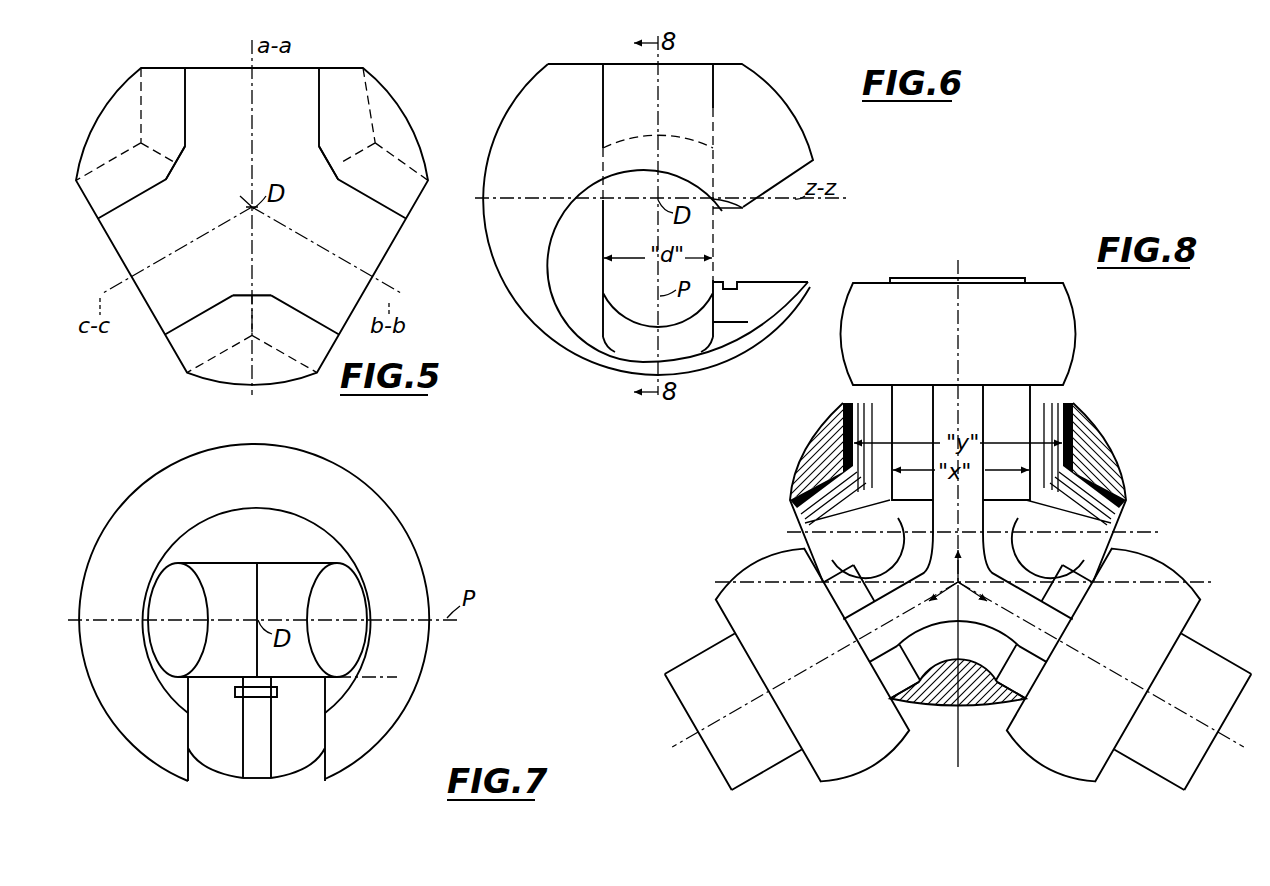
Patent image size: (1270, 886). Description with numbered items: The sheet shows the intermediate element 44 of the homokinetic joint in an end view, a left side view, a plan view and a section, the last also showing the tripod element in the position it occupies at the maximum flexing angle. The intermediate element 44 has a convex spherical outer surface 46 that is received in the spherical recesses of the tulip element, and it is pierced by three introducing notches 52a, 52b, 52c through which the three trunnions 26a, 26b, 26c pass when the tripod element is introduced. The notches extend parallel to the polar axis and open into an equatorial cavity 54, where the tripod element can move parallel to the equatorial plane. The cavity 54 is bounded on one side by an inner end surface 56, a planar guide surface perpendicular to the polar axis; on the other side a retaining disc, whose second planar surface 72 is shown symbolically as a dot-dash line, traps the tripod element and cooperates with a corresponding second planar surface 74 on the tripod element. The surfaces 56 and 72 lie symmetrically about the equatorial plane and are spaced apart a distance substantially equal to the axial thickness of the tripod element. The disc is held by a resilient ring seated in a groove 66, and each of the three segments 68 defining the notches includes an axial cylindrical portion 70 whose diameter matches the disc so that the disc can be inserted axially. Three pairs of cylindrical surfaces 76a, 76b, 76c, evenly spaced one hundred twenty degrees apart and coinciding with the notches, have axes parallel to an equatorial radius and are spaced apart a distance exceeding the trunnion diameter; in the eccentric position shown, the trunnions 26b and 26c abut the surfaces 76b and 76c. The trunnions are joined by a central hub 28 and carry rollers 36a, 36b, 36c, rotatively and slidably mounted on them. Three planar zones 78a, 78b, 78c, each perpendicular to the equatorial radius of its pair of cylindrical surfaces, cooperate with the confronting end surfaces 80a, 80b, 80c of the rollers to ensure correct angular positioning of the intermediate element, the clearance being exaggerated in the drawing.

In FIG. 5, the intermediate element 44 is at (112, 253).
In FIG. 8, the intermediate element 44 is at (960, 492).
In FIG. 5, the convex spherical outer surface 46 is at (124, 83).
In FIG. 6, the convex spherical outer surface 46 is at (509, 102).
In FIG. 7, the convex spherical outer surface 46 is at (402, 517).
In FIG. 5, the equatorial cavity 54 is at (332, 221).
In FIG. 6, the equatorial cavity 54 is at (645, 295).
In FIG. 7, the equatorial cavity 54 is at (242, 617).
In FIG. 8, the equatorial cavity 54 is at (890, 531).
In FIG. 5, the introducing notch 52a is at (316, 127).
In FIG. 7, the introducing notch 52a is at (198, 771).
In FIG. 5, the introducing notch 52b is at (366, 200).
In FIG. 7, the introducing notch 52b is at (303, 749).
In FIG. 5, the introducing notch 52c is at (148, 198).
In FIG. 6, the introducing notch 52c is at (780, 282).
In FIG. 7, the introducing notch 52c is at (213, 729).
In FIG. 6, the inner end surface 56 is at (603, 232).
In FIG. 7, the inner end surface 56 is at (293, 567).
In FIG. 6, the groove 66 is at (730, 281).
In FIG. 7, the groove 66 is at (264, 697).
In FIG. 5, the segments 68 is at (118, 108).
In FIG. 5, the axial cylindrical portion 70 is at (178, 156).
In FIG. 6, the axial cylindrical portion 70 is at (809, 279).
In FIG. 7, the axial cylindrical portion 70 is at (258, 782).
In FIG. 6, the second planar surface 72 is at (717, 230).
In FIG. 7, the second planar surface 72 is at (397, 678).
In FIG. 8, the second planar surface 74 is at (861, 653).
In FIG. 5, the pair of cylindrical surfaces 76a is at (319, 89).
In FIG. 7, the pair of cylindrical surfaces 76a is at (349, 583).
In FIG. 8, the pair of cylindrical surfaces 76a is at (1043, 411).
In FIG. 5, the pair of cylindrical surfaces 76b is at (391, 196).
In FIG. 7, the pair of cylindrical surfaces 76b is at (297, 663).
In FIG. 8, the pair of cylindrical surfaces 76b is at (818, 509).
In FIG. 5, the pair of cylindrical surfaces 76c is at (113, 197).
In FIG. 6, the pair of cylindrical surfaces 76c is at (638, 347).
In FIG. 7, the pair of cylindrical surfaces 76c is at (214, 661).
In FIG. 8, the pair of cylindrical surfaces 76c is at (1086, 498).
In FIG. 5, the planar zone 78a is at (340, 67).
In FIG. 7, the planar zone 78a is at (290, 512).
In FIG. 8, the planar zone 78a is at (1048, 403).
In FIG. 5, the planar zone 78b is at (425, 192).
In FIG. 8, the planar zone 78b is at (1117, 523).
In FIG. 5, the planar zone 78c is at (95, 208).
In FIG. 6, the planar zone 78c is at (575, 292).
In FIG. 8, the planar zone 78c is at (792, 505).
In FIG. 8, the end surface 80a is at (866, 381).
In FIG. 8, the end surface 80b is at (1100, 556).
In FIG. 8, the end surface 80c is at (903, 720).
In FIG. 8, the trunnion 26a is at (1005, 393).
In FIG. 8, the trunnion 26b is at (1210, 663).
In FIG. 8, the trunnion 26c is at (698, 662).
In FIG. 8, the central hub 28 is at (1027, 558).
In FIG. 8, the roller 36a is at (1057, 315).
In FIG. 8, the roller 36b is at (1047, 754).
In FIG. 8, the roller 36c is at (850, 769).